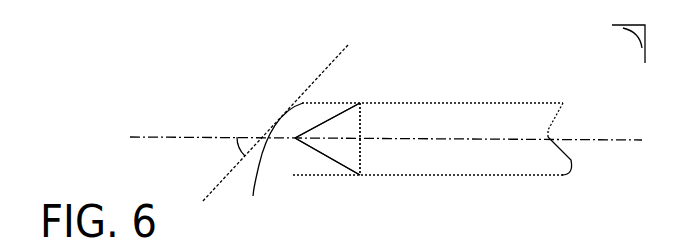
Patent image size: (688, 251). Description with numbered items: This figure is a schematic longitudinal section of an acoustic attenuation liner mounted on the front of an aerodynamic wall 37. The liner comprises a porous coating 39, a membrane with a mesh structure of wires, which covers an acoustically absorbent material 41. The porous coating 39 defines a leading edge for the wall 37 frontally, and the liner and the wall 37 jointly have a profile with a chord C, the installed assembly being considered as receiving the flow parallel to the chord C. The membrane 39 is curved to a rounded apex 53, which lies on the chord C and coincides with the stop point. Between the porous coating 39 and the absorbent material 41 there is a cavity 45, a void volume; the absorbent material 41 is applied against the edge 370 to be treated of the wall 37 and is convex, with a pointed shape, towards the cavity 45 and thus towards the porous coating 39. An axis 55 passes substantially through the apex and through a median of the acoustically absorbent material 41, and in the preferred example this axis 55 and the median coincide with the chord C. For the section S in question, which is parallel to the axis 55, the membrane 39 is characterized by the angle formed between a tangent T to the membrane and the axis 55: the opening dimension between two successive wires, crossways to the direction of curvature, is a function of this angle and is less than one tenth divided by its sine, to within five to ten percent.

The aerodynamic wall 37 is at (432, 168).
The edge of the wall 370 is at (388, 154).
The porous coating 39 is at (321, 179).
The acoustically absorbent material 41 is at (353, 122).
The cavity 45 is at (327, 168).
The rounded apex 53 is at (269, 161).
The axis 55 is at (146, 137).
The tangent T is at (275, 108).
The section S is at (626, 47).
The chord C is at (627, 165).